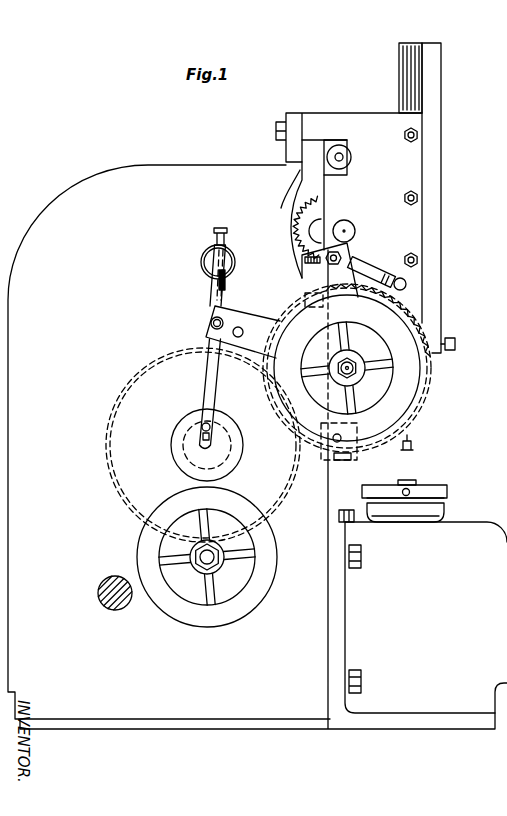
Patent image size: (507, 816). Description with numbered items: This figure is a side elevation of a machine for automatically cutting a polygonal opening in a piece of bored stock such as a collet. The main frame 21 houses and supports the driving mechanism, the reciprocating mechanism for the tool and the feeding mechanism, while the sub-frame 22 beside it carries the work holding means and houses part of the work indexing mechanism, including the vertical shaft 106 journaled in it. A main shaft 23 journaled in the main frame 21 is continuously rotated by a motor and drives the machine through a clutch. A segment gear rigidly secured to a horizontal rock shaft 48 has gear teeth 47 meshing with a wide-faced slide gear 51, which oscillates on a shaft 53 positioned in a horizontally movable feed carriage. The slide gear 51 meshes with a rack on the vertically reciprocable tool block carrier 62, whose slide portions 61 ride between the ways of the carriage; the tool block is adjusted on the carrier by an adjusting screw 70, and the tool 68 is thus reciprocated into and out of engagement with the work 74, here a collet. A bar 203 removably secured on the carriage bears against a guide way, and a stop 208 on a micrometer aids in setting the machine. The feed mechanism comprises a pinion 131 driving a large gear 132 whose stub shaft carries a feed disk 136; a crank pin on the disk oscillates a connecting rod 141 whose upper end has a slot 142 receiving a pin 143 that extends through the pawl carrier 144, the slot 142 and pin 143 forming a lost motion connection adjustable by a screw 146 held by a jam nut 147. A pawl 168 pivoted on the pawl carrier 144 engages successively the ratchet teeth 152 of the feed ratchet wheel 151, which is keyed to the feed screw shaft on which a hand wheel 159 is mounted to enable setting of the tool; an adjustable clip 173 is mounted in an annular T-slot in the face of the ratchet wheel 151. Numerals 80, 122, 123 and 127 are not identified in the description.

The main frame 21 is at (140, 702).
The sub-frame 22 is at (426, 617).
The main shaft 23 is at (107, 606).
The lower handwheel 80 is at (228, 611).
The pinion 131 is at (196, 572).
The large gear 132 is at (115, 492).
The feed disk 136 is at (176, 442).
The connecting rod 141 is at (209, 371).
The slot 142 is at (216, 300).
The pin 143 is at (211, 323).
The pawl carrier 144 is at (247, 322).
The screw 146 is at (226, 284).
The jam nut 147 is at (227, 249).
The rock shaft 48 is at (208, 258).
The gear teeth 47 is at (286, 240).
The slide gear 51 is at (322, 216).
The shaft 53 is at (347, 230).
The pawl 168 is at (374, 268).
The hand wheel 159 is at (405, 367).
The ratchet teeth 152 is at (410, 306).
The feed ratchet wheel 151 is at (418, 412).
The adjusting screw 70 is at (460, 338).
The tool 68 is at (413, 440).
The work 74 is at (413, 482).
The plate 127 is at (447, 492).
The bearing block 122 is at (444, 511).
The base flange 123 is at (434, 514).
The vertical shaft 106 is at (338, 513).
The adjustable clip 173 is at (321, 462).
The slide portions 61 is at (400, 76).
The bar 203 is at (294, 116).
The stop 208 is at (351, 157).
The tool block carrier 62 is at (441, 171).